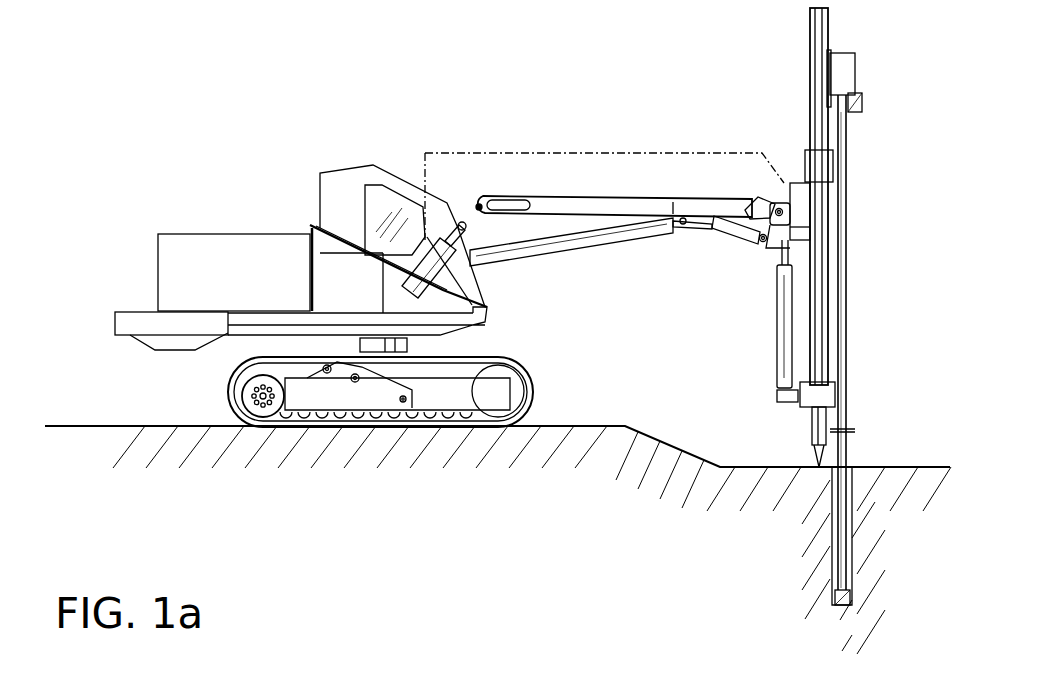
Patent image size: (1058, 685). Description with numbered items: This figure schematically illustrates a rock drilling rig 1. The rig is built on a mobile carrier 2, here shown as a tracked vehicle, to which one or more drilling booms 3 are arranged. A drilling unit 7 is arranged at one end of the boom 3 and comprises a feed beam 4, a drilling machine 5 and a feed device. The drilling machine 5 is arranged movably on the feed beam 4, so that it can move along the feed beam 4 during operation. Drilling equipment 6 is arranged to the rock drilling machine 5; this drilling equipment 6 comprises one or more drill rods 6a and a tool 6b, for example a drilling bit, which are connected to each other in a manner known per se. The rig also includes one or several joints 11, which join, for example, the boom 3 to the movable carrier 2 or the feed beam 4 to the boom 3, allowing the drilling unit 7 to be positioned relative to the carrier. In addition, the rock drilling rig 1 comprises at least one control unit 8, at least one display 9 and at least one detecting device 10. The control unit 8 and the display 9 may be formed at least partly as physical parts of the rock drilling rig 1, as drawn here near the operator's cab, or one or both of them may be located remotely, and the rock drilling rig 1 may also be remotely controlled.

The rock drilling rig 1 is at (294, 98).
The mobile carrier 2 is at (243, 378).
The drilling boom 3 is at (693, 203).
The feed beam 4 is at (820, 333).
The drilling machine 5 is at (843, 80).
The drilling equipment 6 is at (880, 387).
The drill rod 6a is at (845, 270).
The tool 6b is at (835, 604).
The drilling unit 7 is at (748, 76).
The control unit 8 is at (413, 243).
The display 9 is at (343, 238).
The detecting device 10 is at (802, 193).
The joint 11 is at (478, 208).